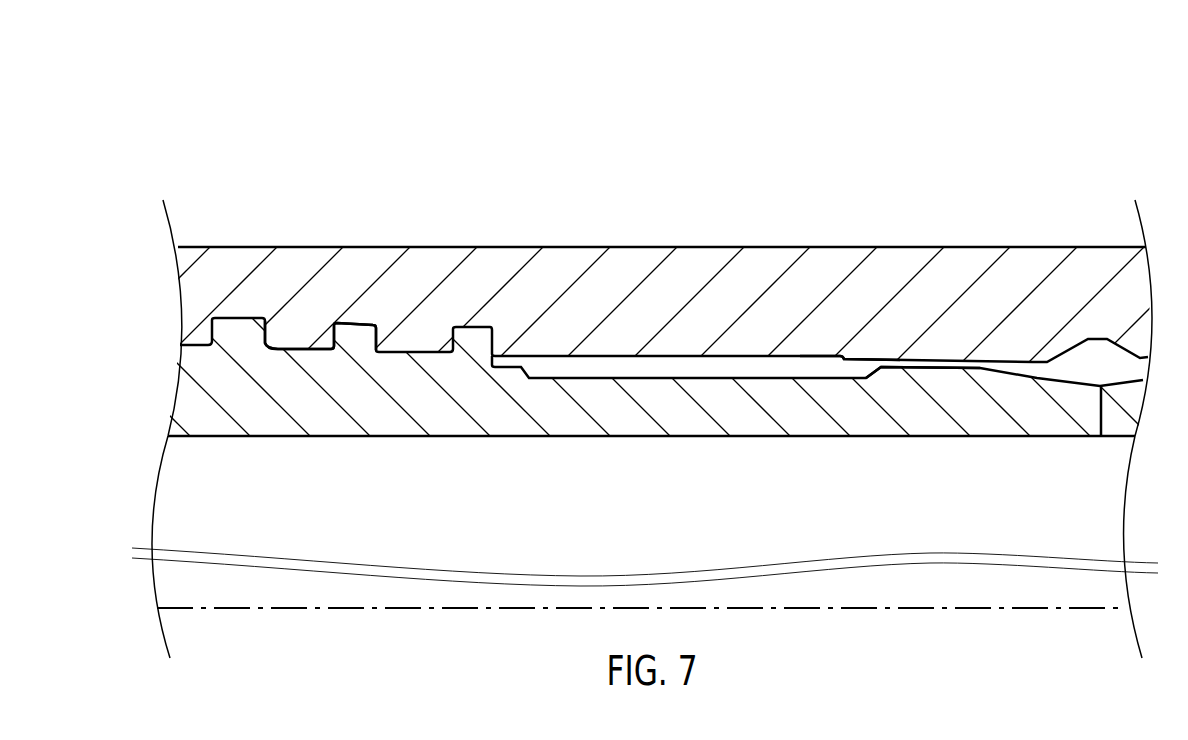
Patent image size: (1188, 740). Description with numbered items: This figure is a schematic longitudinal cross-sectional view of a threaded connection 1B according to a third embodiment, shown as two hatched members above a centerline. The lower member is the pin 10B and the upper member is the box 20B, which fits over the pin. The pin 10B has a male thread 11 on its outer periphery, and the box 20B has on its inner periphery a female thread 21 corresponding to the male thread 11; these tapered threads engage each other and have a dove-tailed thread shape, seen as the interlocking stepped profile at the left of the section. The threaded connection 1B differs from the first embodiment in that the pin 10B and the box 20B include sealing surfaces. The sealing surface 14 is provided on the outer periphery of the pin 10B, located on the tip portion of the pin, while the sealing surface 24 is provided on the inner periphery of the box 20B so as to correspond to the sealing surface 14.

The threaded connection 1B is at (1088, 55).
The pin 10B is at (1022, 443).
The box 20B is at (1002, 235).
The male thread 11 is at (302, 358).
The female thread 21 is at (357, 309).
The sealing surface 14 is at (918, 362).
The sealing surface 24 is at (945, 357).